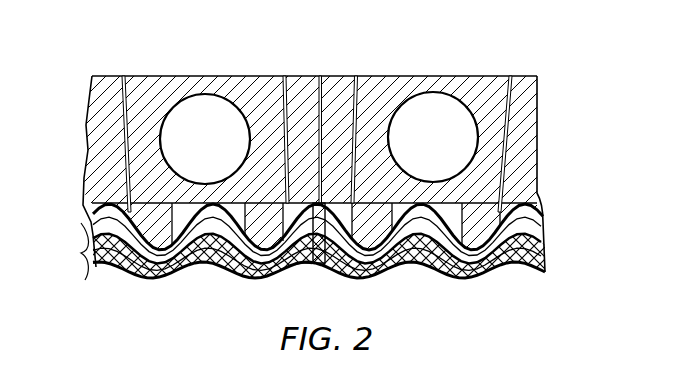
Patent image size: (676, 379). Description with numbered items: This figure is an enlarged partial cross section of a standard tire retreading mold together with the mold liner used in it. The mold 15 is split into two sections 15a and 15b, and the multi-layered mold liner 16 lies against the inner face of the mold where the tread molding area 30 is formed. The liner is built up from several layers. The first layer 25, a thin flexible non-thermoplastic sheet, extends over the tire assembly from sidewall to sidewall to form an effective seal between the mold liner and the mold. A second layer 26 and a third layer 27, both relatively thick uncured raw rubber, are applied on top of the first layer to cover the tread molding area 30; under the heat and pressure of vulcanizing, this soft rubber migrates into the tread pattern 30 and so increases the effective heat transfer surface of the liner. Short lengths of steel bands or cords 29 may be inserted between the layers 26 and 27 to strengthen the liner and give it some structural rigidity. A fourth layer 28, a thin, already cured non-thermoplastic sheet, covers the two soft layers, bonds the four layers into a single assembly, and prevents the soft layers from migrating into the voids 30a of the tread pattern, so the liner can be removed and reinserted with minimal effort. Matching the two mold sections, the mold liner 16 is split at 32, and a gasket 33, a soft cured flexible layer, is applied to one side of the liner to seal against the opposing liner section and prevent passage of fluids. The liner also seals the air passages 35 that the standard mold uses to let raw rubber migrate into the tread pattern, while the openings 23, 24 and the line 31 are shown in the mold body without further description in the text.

The mold 15 is at (528, 128).
The mold section 15a is at (253, 90).
The mold section 15b is at (340, 78).
The mold liner 16 is at (80, 252).
The bore 23 is at (209, 103).
The bore 24 is at (437, 100).
The first layer 25 is at (545, 260).
The second layer 26 is at (543, 248).
The third layer 27 is at (540, 238).
The fourth layer 28 is at (542, 227).
The steel bands or cords 29 is at (214, 236).
The tread molding area 30 is at (538, 183).
The void 30a is at (181, 207).
The dividing joint 31 is at (320, 76).
The split 32 is at (323, 262).
The gasket 33 is at (303, 263).
The air passages 35 is at (123, 76).